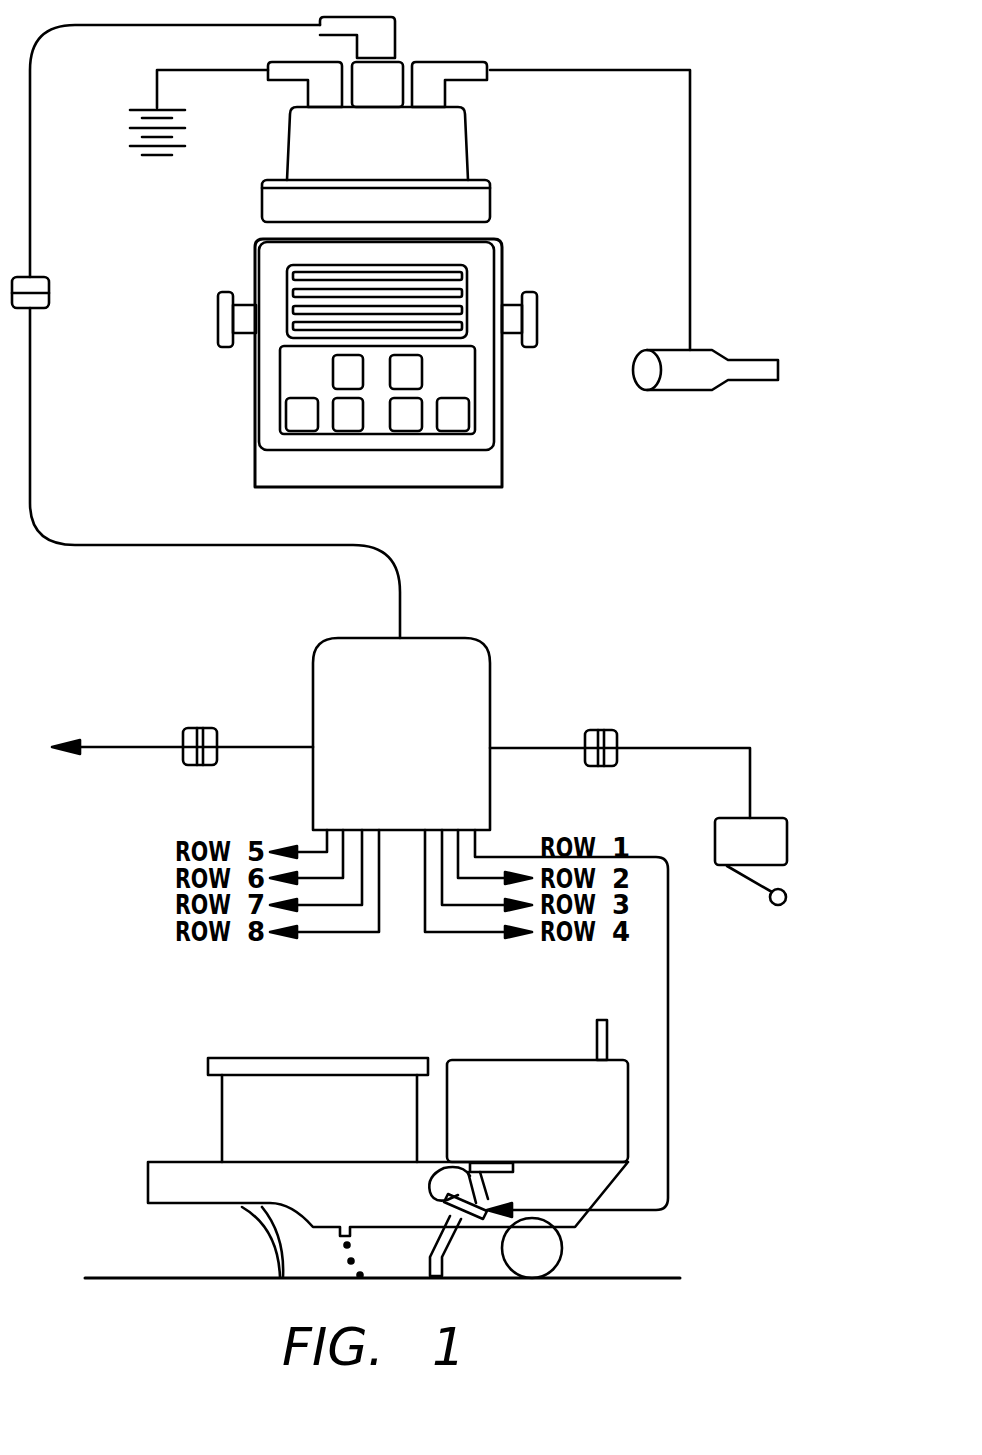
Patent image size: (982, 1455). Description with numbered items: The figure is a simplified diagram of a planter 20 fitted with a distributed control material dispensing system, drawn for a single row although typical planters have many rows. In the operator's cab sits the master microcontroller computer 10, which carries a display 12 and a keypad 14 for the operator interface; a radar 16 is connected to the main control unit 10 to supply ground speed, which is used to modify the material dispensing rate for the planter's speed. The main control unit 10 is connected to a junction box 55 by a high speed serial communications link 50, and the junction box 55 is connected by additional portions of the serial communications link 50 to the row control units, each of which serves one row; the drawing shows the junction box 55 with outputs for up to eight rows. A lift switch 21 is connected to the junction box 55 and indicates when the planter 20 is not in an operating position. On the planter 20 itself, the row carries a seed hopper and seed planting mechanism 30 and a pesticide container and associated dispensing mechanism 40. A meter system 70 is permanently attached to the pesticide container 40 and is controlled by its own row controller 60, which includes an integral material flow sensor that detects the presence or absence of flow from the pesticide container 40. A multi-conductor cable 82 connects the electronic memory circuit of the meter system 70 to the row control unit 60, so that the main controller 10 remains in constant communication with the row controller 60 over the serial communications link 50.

The master microcontroller computer 10 is at (442, 145).
The display 12 is at (418, 283).
The keypad 14 is at (303, 372).
The radar 16 is at (697, 380).
The planter 20 is at (308, 1198).
The lift switch 21 is at (776, 840).
The seed hopper and seed planting mechanism 30 is at (248, 1115).
The pesticide container and associated dispensing mechanism 40 is at (548, 1073).
The high speed serial communications link 50 is at (32, 502).
The junction box 55 is at (425, 667).
The row controller 60 is at (492, 1201).
The meter system 70 is at (500, 1163).
The multi-conductor cable 82 is at (430, 1186).